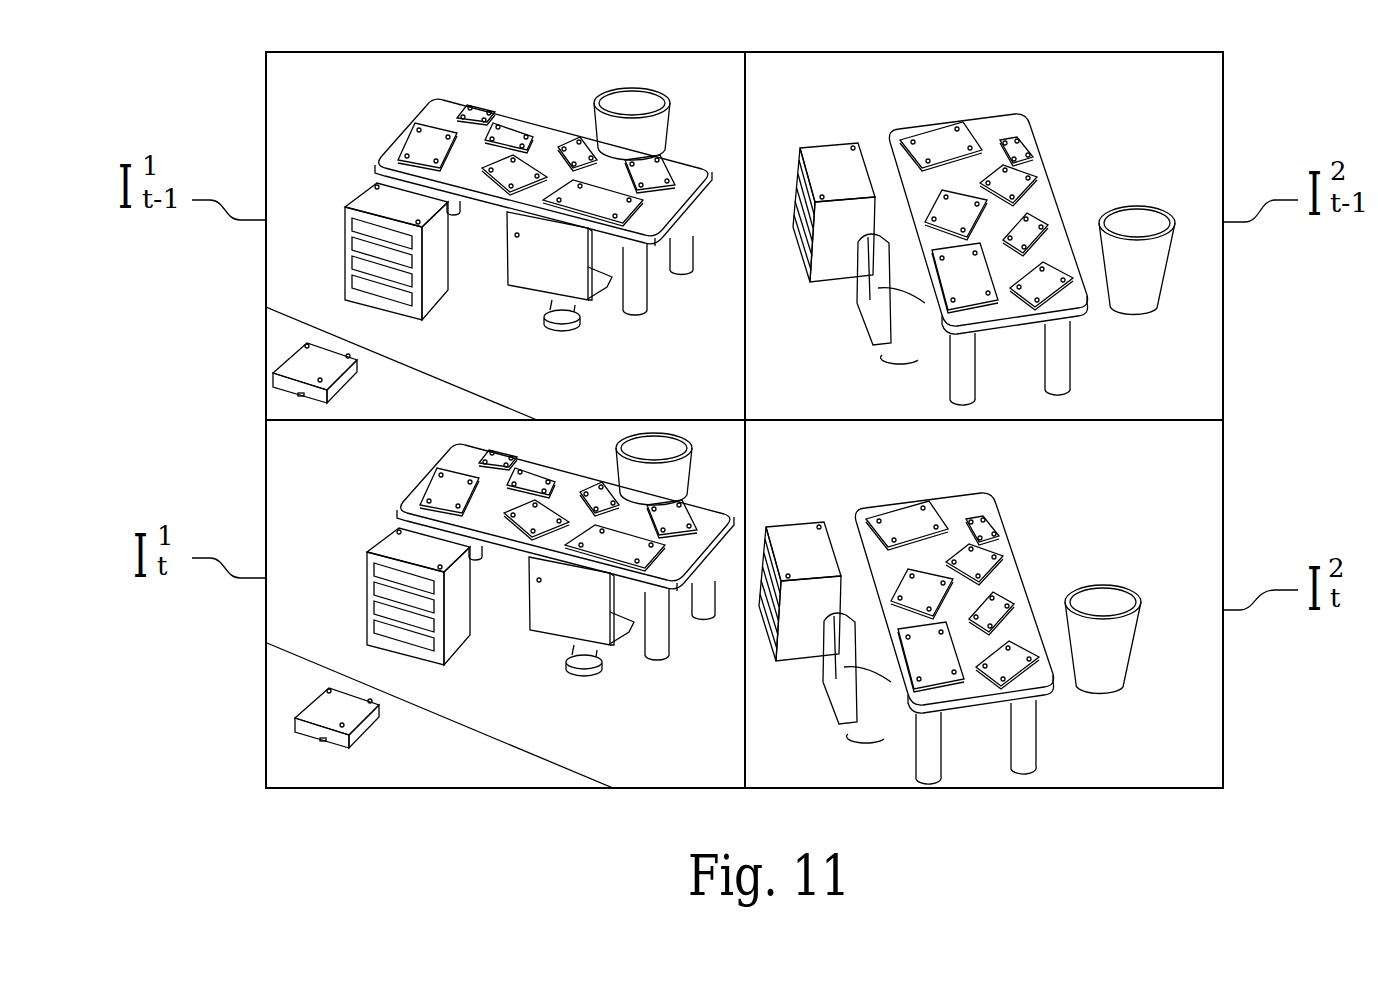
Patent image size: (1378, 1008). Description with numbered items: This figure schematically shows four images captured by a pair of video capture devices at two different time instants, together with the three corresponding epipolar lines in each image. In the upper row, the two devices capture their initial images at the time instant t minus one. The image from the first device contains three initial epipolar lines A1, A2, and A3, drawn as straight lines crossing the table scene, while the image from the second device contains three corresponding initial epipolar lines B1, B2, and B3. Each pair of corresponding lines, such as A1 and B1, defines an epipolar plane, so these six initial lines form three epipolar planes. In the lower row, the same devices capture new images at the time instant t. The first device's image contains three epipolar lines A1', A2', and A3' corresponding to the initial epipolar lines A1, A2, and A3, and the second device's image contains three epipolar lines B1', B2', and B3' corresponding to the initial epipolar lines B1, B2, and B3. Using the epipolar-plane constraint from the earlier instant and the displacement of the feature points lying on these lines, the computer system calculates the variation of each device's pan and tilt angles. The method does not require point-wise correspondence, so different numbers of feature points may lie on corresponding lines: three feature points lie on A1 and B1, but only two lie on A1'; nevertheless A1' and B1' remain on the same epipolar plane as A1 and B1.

The initial epipolar line A1 is at (511, 225).
The initial epipolar line A2 is at (566, 225).
The initial epipolar line A3 is at (625, 225).
The initial epipolar line B1 is at (938, 205).
The initial epipolar line B2 is at (966, 229).
The initial epipolar line B3 is at (1000, 260).
The epipolar line A1' is at (546, 585).
The epipolar line A2' is at (594, 585).
The epipolar line A3' is at (657, 585).
The epipolar line B1' is at (924, 576).
The epipolar line B2' is at (941, 602).
The epipolar line B3' is at (986, 633).